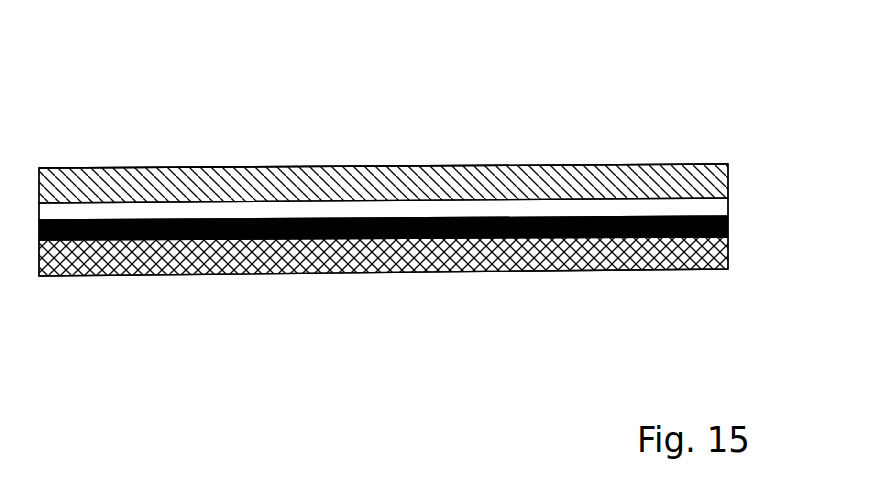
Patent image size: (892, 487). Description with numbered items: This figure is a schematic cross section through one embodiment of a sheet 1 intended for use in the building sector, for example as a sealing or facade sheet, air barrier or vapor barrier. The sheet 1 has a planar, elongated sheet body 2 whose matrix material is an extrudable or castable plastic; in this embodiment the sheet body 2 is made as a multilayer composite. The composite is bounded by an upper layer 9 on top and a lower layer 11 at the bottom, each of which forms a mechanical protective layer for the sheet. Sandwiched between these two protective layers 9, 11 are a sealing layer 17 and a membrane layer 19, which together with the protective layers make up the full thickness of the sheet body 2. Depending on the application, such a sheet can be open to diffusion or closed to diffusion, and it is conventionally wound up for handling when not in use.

The sheet 1 is at (579, 111).
The sheet body 2 is at (275, 162).
The upper layer 9 is at (697, 177).
The sealing layer 17 is at (717, 208).
The membrane layer 19 is at (730, 231).
The lower layer 11 is at (698, 257).